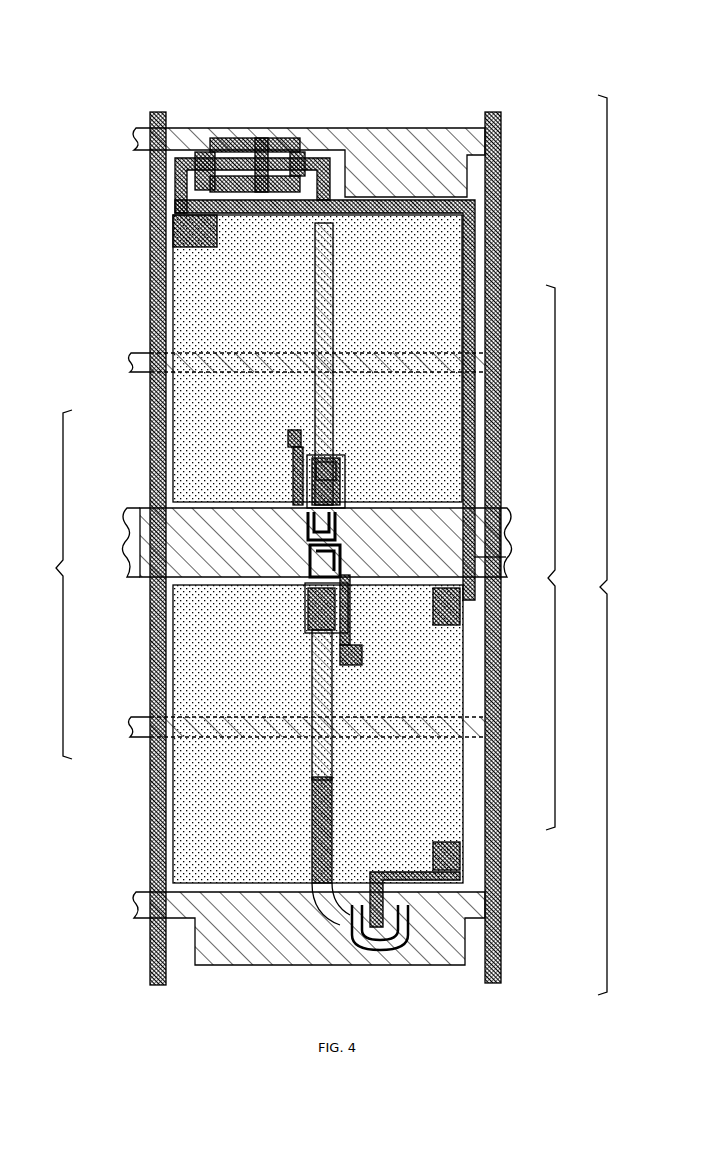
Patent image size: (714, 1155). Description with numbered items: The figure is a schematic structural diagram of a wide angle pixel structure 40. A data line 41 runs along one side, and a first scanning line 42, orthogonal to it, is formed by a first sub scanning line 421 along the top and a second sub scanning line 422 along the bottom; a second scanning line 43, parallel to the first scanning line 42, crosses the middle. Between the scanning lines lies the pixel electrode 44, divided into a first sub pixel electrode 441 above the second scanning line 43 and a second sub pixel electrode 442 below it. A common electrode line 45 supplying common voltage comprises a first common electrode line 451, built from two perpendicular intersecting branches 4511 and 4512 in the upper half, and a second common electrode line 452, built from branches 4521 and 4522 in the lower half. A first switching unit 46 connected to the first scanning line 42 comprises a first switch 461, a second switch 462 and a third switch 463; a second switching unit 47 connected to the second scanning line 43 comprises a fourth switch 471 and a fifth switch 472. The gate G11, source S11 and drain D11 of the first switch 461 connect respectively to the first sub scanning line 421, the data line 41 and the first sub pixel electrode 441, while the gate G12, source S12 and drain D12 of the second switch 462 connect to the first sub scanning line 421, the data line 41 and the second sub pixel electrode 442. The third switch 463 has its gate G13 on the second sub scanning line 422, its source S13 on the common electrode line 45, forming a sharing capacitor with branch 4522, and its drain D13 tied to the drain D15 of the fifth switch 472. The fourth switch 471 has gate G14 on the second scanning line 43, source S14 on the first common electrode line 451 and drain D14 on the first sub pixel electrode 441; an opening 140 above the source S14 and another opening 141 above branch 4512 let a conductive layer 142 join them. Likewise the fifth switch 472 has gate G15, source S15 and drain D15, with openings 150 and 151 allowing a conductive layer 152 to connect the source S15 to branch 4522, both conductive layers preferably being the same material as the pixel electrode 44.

The pixel structure 40 is at (310, 31).
The data line 41 is at (150, 942).
The first scanning line 42 is at (563, 545).
The first sub scanning line 421 is at (455, 128).
The second sub scanning line 422 is at (462, 965).
The second scanning line 43 is at (495, 530).
The pixel electrode 44 is at (566, 557).
The first sub pixel electrode 441 is at (471, 306).
The second sub pixel electrode 442 is at (456, 786).
The common electrode line 45 is at (51, 584).
The first common electrode line 451 is at (128, 360).
The branch 4511 is at (256, 352).
The branch 4512 is at (316, 320).
The second common electrode line 452 is at (128, 730).
The branch 4521 is at (271, 716).
The branch 4522 is at (316, 768).
The first switching unit 46 is at (243, 54).
The first switch 461 is at (225, 128).
The second switch 462 is at (322, 128).
The third switch 463 is at (367, 958).
The second switching unit 47 is at (305, 572).
The fourth switch 471 is at (296, 535).
The fifth switch 472 is at (463, 560).
The opening 140 is at (337, 500).
The opening 141 is at (334, 478).
The conductive layer 142 is at (338, 450).
The opening 150 is at (345, 596).
The opening 151 is at (312, 616).
The conductive layer 152 is at (318, 646).
The gate G11 is at (178, 170).
The gate G12 is at (272, 128).
The gate G13 is at (360, 938).
The gate G14 is at (306, 520).
The gate G15 is at (353, 550).
The source S11 is at (180, 130).
The source S12 is at (268, 186).
The source S13 is at (323, 905).
The source S14 is at (338, 510).
The source S15 is at (310, 588).
The drain D11 is at (182, 219).
The drain D12 is at (470, 222).
The drain D13 is at (420, 872).
The drain D14 is at (300, 495).
The drain D15 is at (350, 632).